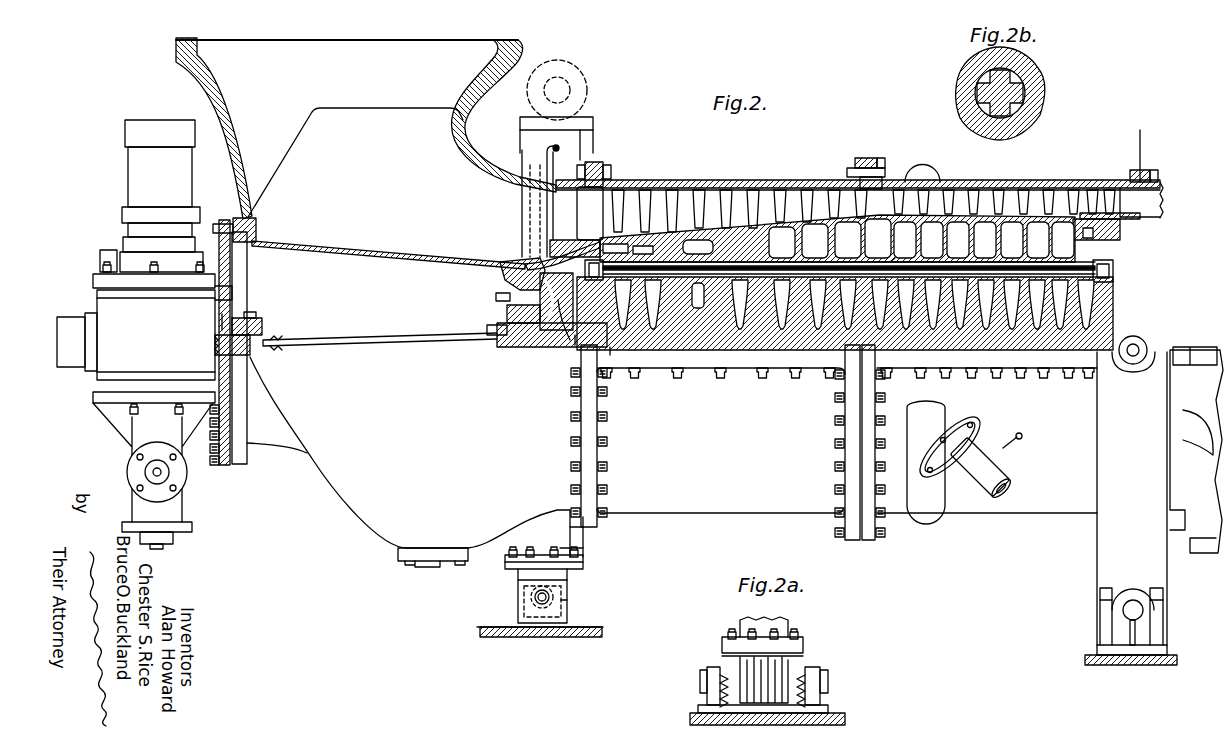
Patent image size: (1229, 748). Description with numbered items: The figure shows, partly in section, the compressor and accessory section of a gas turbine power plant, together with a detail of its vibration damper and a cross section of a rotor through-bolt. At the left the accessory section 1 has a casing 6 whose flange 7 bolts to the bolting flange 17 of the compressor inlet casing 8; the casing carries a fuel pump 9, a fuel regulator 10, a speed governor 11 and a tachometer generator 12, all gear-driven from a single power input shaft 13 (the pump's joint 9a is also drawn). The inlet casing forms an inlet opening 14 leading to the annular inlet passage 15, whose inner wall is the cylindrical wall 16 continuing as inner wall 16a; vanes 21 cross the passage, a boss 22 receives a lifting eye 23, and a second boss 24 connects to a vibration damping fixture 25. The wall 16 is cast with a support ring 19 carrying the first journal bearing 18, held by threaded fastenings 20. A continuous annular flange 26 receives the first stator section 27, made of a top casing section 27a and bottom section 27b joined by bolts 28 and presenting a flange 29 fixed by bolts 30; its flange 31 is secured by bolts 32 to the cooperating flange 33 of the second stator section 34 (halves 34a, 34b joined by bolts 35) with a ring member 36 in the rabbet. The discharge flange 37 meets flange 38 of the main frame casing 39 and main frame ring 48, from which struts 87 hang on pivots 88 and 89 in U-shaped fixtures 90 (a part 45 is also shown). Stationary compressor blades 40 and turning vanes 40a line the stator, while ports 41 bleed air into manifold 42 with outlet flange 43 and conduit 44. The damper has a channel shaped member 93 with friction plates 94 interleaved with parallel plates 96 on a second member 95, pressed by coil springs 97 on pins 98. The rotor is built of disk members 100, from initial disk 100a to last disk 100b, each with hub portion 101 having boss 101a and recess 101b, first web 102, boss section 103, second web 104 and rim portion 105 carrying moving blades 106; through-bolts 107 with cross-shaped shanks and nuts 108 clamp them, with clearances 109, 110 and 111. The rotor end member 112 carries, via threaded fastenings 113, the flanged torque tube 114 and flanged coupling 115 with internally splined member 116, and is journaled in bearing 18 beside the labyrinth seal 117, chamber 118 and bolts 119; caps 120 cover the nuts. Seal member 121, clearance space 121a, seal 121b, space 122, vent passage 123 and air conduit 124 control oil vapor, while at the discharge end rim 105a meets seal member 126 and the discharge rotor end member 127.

In FIG. 2, the accessory section 1 is at (80, 229).
In FIG. 2, the accessory casing 6 is at (247, 297).
In FIG. 2, the flange 7 is at (230, 261).
In FIG. 2, the compressor inlet casing 8 is at (368, 527).
In FIG. 2, the fuel pump 9 is at (182, 508).
In FIG. 2, the flanged joint 9a is at (160, 473).
In FIG. 2, the fuel regulator 10 is at (154, 338).
In FIG. 2, the speed governor 11 is at (151, 196).
In FIG. 2, the tachometer generator 12 is at (70, 316).
In FIG. 2, the power input shaft 13 is at (222, 348).
In FIG. 2, the inlet opening 14 is at (421, 47).
In FIG. 2, the compressor inlet passage 15 is at (462, 205).
In FIG. 2, the cylindrical wall 16 is at (388, 257).
In FIG. 2, the inner wall 16a is at (527, 260).
In FIG. 2, the bolting flange 17 is at (254, 236).
In FIG. 2, the first journal bearing 18 is at (507, 318).
In FIG. 2, the support ring 19 is at (508, 285).
In FIG. 2, the threaded fastenings 20 is at (504, 297).
In FIG. 2, the vanes 21 is at (521, 215).
In FIG. 2, the boss 22 is at (522, 140).
In FIG. 2, the lifting eye 23 is at (580, 70).
In FIG. 2, the second boss 24 is at (537, 525).
In FIG. 2A, the second boss 24 is at (785, 623).
In FIG. 2, the vibration damping fixture 25 is at (569, 600).
In FIG. 2, the continuous annular flange 26 is at (592, 165).
In FIG. 2, the first compressor stator section 27 is at (732, 155).
In FIG. 2, the top casing section 27a is at (782, 183).
In FIG. 2, the bottom casing section 27b is at (778, 510).
In FIG. 2, the bolts 28 is at (762, 380).
In FIG. 2, the annular bolting flange 29 is at (598, 431).
In FIG. 2, the bolts 30 is at (607, 478).
In FIG. 2, the flange 31 is at (860, 158).
In FIG. 2, the bolts 32 is at (884, 172).
In FIG. 2, the cooperating flange 33 is at (876, 158).
In FIG. 2, the second compressor stator section 34 is at (1029, 171).
In FIG. 2, the upper half 34a is at (988, 182).
In FIG. 2, the lower half 34b is at (1015, 510).
In FIG. 2, the bolts 35 is at (1088, 382).
In FIG. 2, the ring member 36 is at (860, 182).
In FIG. 2, the bolting flange 37 is at (1136, 172).
In FIG. 2, the cooperating flange 38 is at (1153, 172).
In FIG. 2, the intermediate main frame casing 39 is at (1171, 206).
In FIG. 2, the stationary compressor blades 40 is at (660, 186).
In FIG. 2, the turning vanes 40a is at (1108, 188).
In FIG. 2, the ports 41 is at (922, 165).
In FIG. 2, the manifold 42 is at (942, 180).
In FIG. 2, the outlet flange 43 is at (928, 465).
In FIG. 2, the conduit 44 is at (982, 470).
In FIG. 2, the ring 45 is at (1136, 220).
In FIG. 2, the main frame ring 48 is at (1139, 142).
In FIG. 2, the struts 87 is at (1097, 551).
In FIG. 2, the pivot 88 is at (1145, 348).
In FIG. 2, the pivots 89 is at (1138, 610).
In FIG. 2, the U-shaped fixtures 90 is at (1160, 637).
In FIG. 2, the channel shaped member 93 is at (518, 624).
In FIG. 2A, the channel shaped member 93 is at (708, 672).
In FIG. 2, the friction plates 94 is at (567, 608).
In FIG. 2A, the friction plates 94 is at (738, 665).
In FIG. 2, the second member 95 is at (583, 563).
In FIG. 2A, the second member 95 is at (803, 650).
In FIG. 2, the parallel plates 96 is at (583, 572).
In FIG. 2A, the parallel plates 96 is at (803, 656).
In FIG. 2, the coil springs 97 is at (530, 591).
In FIG. 2A, the coil springs 97 is at (828, 680).
In FIG. 2A, the pins 98 is at (700, 680).
In FIG. 2, the disk member 100 is at (752, 310).
In FIG. 2, the initial blade-carrying disk 100a is at (640, 343).
In FIG. 2, the last blade-carrying disk 100b is at (1072, 345).
In FIG. 2, the hub portion 101 is at (760, 343).
In FIG. 2, the cylindrical boss 101a is at (738, 343).
In FIG. 2, the cylindrical recess 101b is at (782, 345).
In FIG. 2, the first radially extending web portion 102 is at (698, 300).
In FIG. 2, the circumferential flange or boss section 103 is at (699, 293).
In FIG. 2B, the circumferential flange or boss section 103 is at (1035, 98).
In FIG. 2, the second radially extending web portion 104 is at (715, 244).
In FIG. 2, the rim portion 105 is at (698, 246).
In FIG. 2, the axially extending rim portion 105a is at (1095, 246).
In FIG. 2, the moving blades 106 is at (727, 195).
In FIG. 2, the through-bolts 107 is at (894, 262).
In FIG. 2B, the through-bolts 107 is at (978, 96).
In FIG. 2, the nuts 108 is at (586, 271).
In FIG. 2, the axial clearance 109 is at (812, 346).
In FIG. 2, the axial clearance 110 is at (808, 343).
In FIG. 2, the clearance space 111 is at (921, 238).
In FIG. 2, the rotor end member 112 is at (558, 345).
In FIG. 2, the threaded fastenings 113 is at (487, 329).
In FIG. 2, the flanged torque tube 114 is at (383, 340).
In FIG. 2, the flanged coupling 115 is at (262, 323).
In FIG. 2, the internally splined member 116 is at (223, 314).
In FIG. 2, the two-part labyrinth seal 117 is at (540, 345).
In FIG. 2, the intermediate chamber 118 is at (564, 253).
In FIG. 2, the bolts 119 is at (573, 347).
In FIG. 2, the cap 120 is at (588, 265).
In FIG. 2, the labyrinth seal member 121 is at (612, 243).
In FIG. 2, the clearance space 121a is at (628, 243).
In FIG. 2, the labyrinth seal 121b is at (654, 249).
In FIG. 2, the space 122 is at (505, 266).
In FIG. 2, the passage 123 is at (560, 192).
In FIG. 2, the air conduit 124 is at (547, 160).
In FIG. 2, the labyrinth seal member 126 is at (1118, 238).
In FIG. 2, the discharge rotor end member 127 is at (1116, 365).